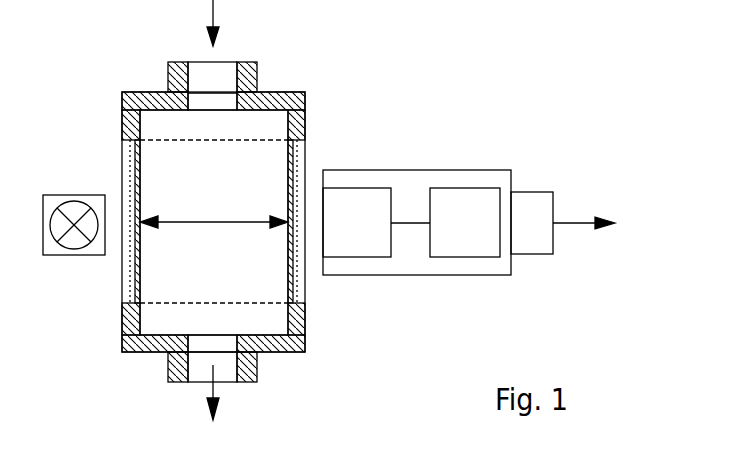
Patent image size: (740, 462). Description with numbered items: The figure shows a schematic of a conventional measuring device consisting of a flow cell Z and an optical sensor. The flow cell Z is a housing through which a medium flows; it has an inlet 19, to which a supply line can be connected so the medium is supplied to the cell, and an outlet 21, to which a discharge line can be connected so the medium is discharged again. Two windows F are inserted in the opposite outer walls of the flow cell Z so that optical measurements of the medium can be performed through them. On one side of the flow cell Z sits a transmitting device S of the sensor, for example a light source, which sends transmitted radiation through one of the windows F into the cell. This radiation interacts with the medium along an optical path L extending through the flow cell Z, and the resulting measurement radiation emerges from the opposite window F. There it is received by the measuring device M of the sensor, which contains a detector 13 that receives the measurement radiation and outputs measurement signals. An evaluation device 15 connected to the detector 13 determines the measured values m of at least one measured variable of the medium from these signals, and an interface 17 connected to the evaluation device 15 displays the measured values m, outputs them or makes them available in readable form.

The inlet 19 is at (213, 80).
The outlet 21 is at (257, 372).
The detector 13 is at (343, 236).
The evaluation device 15 is at (451, 236).
The interface 17 is at (517, 236).
The flow cell Z is at (275, 92).
The window F is at (122, 172).
The optical path L is at (223, 222).
The transmitting device S is at (60, 247).
The measuring device M is at (408, 170).
The measured values m is at (584, 209).